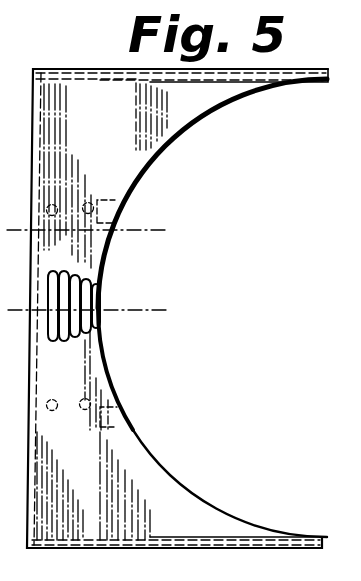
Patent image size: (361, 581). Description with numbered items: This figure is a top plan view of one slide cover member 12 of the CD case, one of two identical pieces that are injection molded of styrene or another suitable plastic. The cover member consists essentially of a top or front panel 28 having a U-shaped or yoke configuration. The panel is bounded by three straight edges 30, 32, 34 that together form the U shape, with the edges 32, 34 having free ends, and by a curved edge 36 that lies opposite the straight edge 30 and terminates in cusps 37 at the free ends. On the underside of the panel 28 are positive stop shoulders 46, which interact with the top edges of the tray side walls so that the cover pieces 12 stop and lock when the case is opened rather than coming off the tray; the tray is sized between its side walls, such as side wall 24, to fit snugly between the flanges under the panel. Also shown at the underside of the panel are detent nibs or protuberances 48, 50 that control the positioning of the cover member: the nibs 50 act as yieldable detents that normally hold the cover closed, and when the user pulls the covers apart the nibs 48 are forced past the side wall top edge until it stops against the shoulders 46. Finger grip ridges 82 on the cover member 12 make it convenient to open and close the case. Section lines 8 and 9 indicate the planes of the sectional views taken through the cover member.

The cover member 12 is at (76, 61).
The side wall 24 is at (232, 5).
The top or front panel 28 is at (181, 107).
The straight edge 30 is at (26, 432).
The straight edge 32 is at (116, 68).
The straight edge 34 is at (306, 552).
The curved edge 36 is at (172, 472).
The cusps 37 is at (286, 91).
The positive stop shoulders 46 is at (118, 210).
The detent nibs 48 is at (88, 204).
The detent nibs 50 is at (56, 203).
The finger grip ridges 82 is at (100, 294).
The section line 8- 8 is at (21, 244).
The section line 9- 9 is at (21, 320).